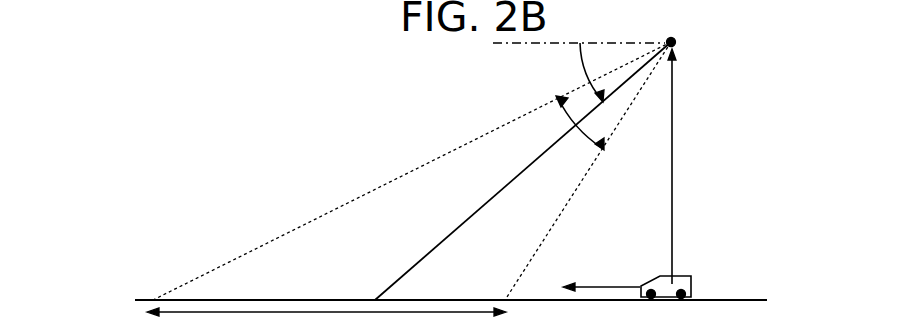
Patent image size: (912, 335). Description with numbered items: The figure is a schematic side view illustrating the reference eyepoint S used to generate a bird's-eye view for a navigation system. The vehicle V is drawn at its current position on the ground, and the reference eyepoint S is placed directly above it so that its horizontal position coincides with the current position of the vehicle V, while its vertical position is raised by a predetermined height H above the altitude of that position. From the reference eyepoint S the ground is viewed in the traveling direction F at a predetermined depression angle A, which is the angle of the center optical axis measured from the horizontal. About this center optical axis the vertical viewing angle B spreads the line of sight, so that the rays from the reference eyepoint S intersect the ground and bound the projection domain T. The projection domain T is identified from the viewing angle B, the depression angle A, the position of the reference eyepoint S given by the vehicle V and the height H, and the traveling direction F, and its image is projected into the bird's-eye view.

The reference eyepoint S is at (678, 40).
The depression angle A is at (578, 70).
The viewing angle B is at (572, 115).
The height H is at (684, 166).
The vehicle V is at (668, 285).
The traveling direction F is at (601, 270).
The projection domain T is at (326, 320).